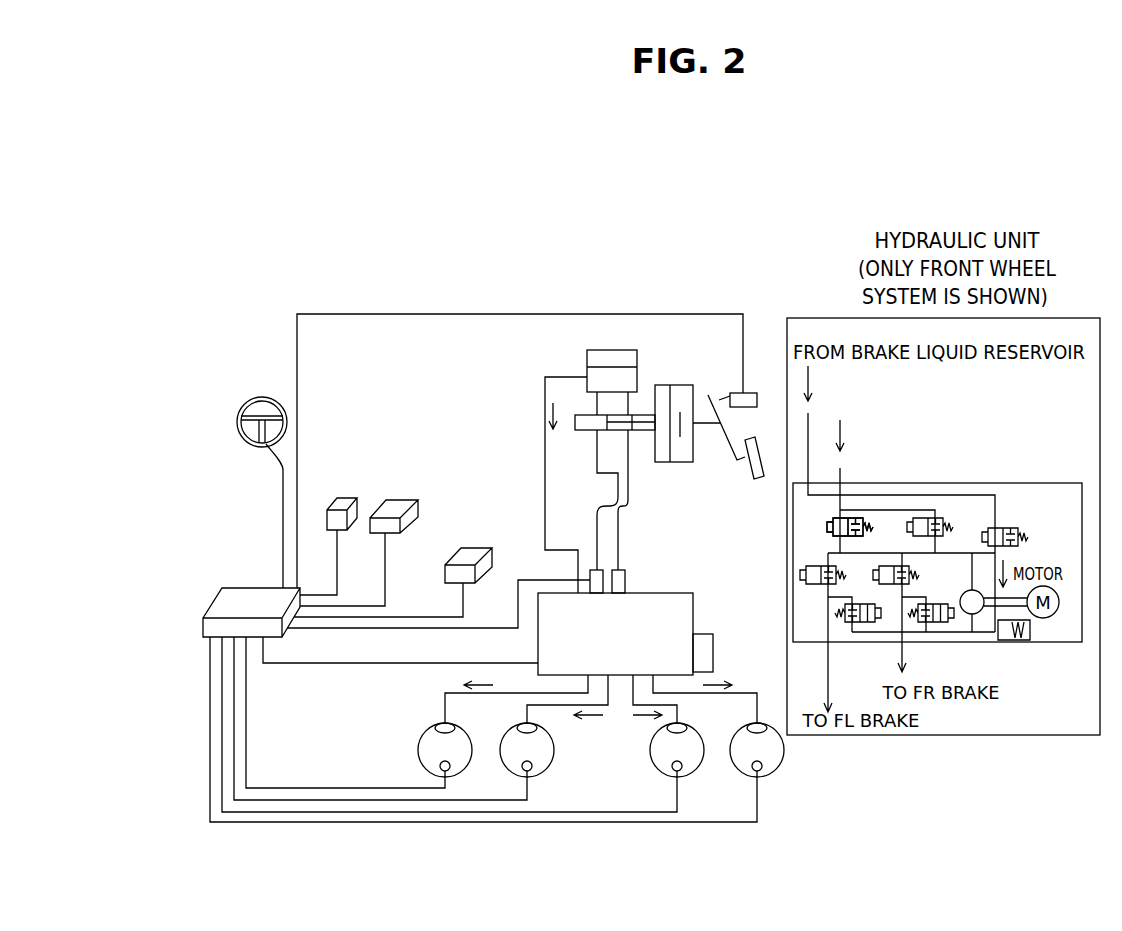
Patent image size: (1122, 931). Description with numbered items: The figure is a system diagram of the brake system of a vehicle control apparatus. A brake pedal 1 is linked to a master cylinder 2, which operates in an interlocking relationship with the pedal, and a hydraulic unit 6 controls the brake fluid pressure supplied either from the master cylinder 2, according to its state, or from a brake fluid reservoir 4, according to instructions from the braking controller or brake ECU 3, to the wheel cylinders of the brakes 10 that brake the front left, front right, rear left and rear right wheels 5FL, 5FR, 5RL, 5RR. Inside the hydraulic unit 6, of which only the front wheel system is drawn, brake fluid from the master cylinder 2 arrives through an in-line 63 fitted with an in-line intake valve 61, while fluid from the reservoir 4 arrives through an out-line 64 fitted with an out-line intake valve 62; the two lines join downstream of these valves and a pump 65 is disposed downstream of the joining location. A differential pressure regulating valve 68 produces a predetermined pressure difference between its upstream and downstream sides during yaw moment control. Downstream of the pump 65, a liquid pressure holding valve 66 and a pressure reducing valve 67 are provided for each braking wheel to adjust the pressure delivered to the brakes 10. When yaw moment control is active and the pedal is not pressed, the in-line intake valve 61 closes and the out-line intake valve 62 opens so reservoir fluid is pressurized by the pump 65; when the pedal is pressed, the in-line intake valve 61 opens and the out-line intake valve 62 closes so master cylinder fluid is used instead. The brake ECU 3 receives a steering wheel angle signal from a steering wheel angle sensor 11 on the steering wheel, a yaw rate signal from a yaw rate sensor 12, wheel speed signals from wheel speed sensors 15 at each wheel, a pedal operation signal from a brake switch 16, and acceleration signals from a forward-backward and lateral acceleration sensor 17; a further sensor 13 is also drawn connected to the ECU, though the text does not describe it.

The brake pedal 1 is at (752, 479).
The master cylinder 2 is at (637, 430).
The braking controller (brake ECU) 3 is at (287, 637).
The brake fluid reservoir 4 is at (587, 354).
The hydraulic unit 6 is at (678, 593).
The brakes (wheel brakes) 10 is at (440, 724).
The steering wheel angle sensor 11 is at (243, 410).
The yaw rate sensor 12 is at (400, 500).
The lateral acceleration sensor 13 is at (470, 548).
The wheel speed sensors 15 is at (438, 768).
The brake switch 16 is at (746, 393).
The forward-backward and lateral acceleration sensor 17 is at (340, 498).
The front left wheel 5FL is at (403, 755).
The front right wheel 5FR is at (563, 761).
The rear left wheel 5RL is at (650, 776).
The rear right wheel 5RR is at (786, 780).
The in-line intake valve 61 is at (926, 517).
The out-line intake valve 62 is at (1012, 527).
The in-line 63 is at (597, 473).
The out-line 64 is at (545, 395).
The pump 65 is at (971, 614).
The liquid pressure holding valve 66 is at (813, 585).
The pressure reducing valve 67 is at (852, 623).
The differential pressure regulating valve 68 is at (866, 518).